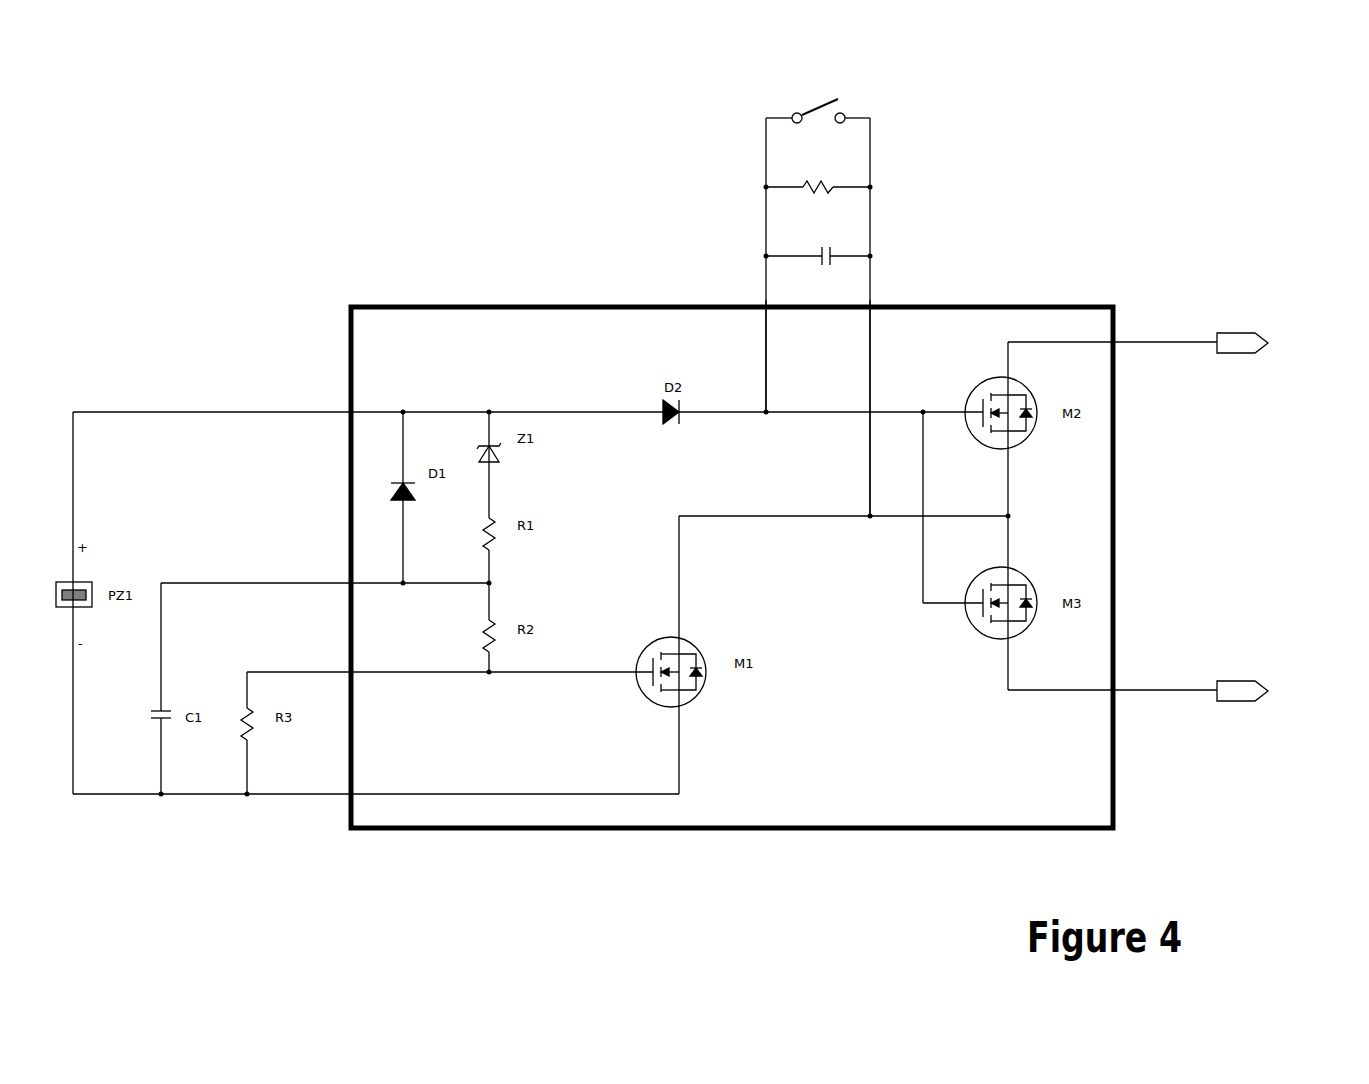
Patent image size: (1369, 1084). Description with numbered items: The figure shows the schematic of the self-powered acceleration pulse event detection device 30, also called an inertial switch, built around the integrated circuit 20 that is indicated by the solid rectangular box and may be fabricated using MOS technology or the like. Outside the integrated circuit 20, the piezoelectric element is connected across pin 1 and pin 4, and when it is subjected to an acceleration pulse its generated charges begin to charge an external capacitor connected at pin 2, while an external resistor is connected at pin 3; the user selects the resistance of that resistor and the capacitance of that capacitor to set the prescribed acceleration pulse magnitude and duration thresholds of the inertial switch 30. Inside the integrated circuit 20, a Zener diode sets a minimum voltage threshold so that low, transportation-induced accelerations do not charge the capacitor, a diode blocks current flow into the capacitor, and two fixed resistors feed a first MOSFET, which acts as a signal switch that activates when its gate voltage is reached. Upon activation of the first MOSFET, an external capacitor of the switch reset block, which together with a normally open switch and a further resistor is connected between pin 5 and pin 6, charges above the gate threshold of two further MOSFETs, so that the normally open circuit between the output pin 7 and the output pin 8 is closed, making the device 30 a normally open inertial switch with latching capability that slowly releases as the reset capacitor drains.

The pin 1 is at (528, 388).
The pin 2 is at (325, 562).
The pin 3 is at (450, 652).
The pin 4 is at (376, 771).
The pin 5 is at (744, 338).
The pin 6 is at (896, 390).
The pin 7 is at (1169, 674).
The pin 8 is at (1169, 324).
The integrated circuit 20 is at (497, 302).
The self-powered acceleration pulse event detection device 30 is at (1200, 128).